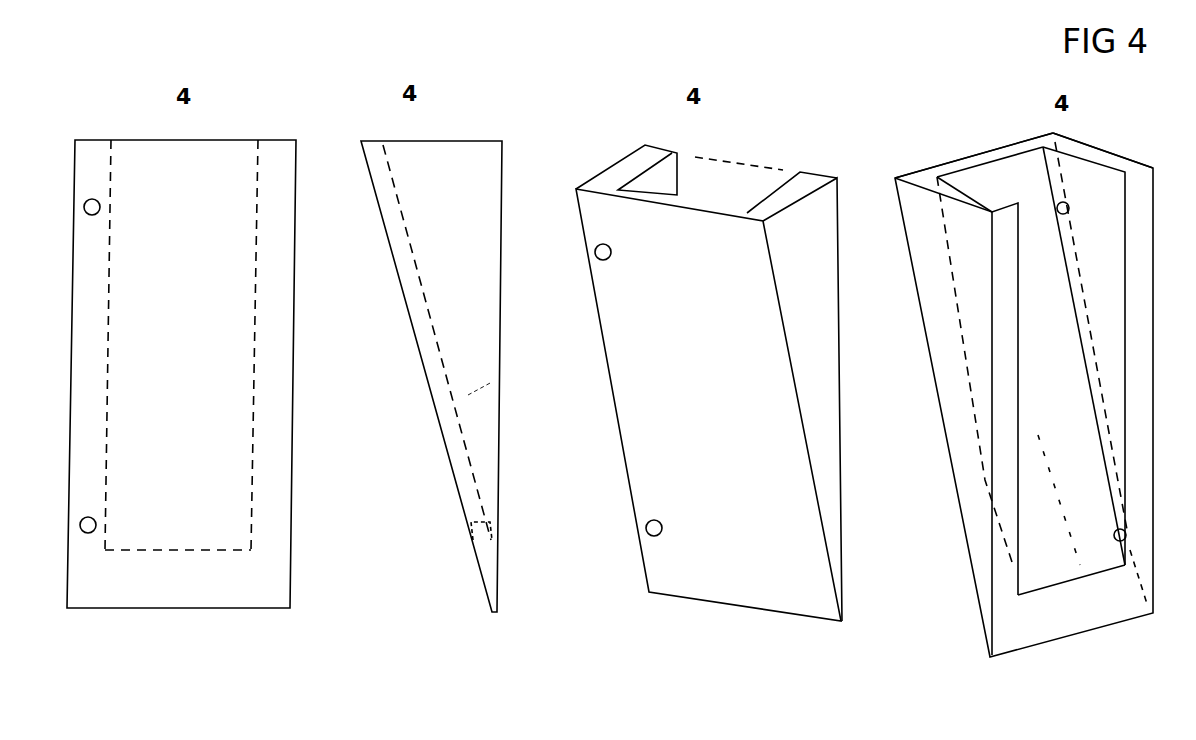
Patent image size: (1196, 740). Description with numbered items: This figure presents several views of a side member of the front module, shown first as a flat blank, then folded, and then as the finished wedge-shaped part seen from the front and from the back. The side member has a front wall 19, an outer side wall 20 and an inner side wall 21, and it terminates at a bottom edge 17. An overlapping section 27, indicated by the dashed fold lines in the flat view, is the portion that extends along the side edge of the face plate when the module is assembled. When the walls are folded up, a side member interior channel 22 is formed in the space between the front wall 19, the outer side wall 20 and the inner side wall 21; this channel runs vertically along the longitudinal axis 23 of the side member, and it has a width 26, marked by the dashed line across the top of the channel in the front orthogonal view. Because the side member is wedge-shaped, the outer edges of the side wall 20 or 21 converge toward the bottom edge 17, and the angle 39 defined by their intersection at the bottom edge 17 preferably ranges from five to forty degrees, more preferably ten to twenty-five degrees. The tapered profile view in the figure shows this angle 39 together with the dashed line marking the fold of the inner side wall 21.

The bottom edge 17 is at (610, 403).
The front wall 19 is at (824, 328).
The outer side wall 20 is at (895, 401).
The inner side wall 21 is at (630, 170).
The side member interior channel 22 is at (885, 173).
The longitudinal axis 23 is at (1071, 515).
The width 26 is at (742, 160).
The overlapping section 27 is at (169, 345).
The angle 39 is at (437, 342).